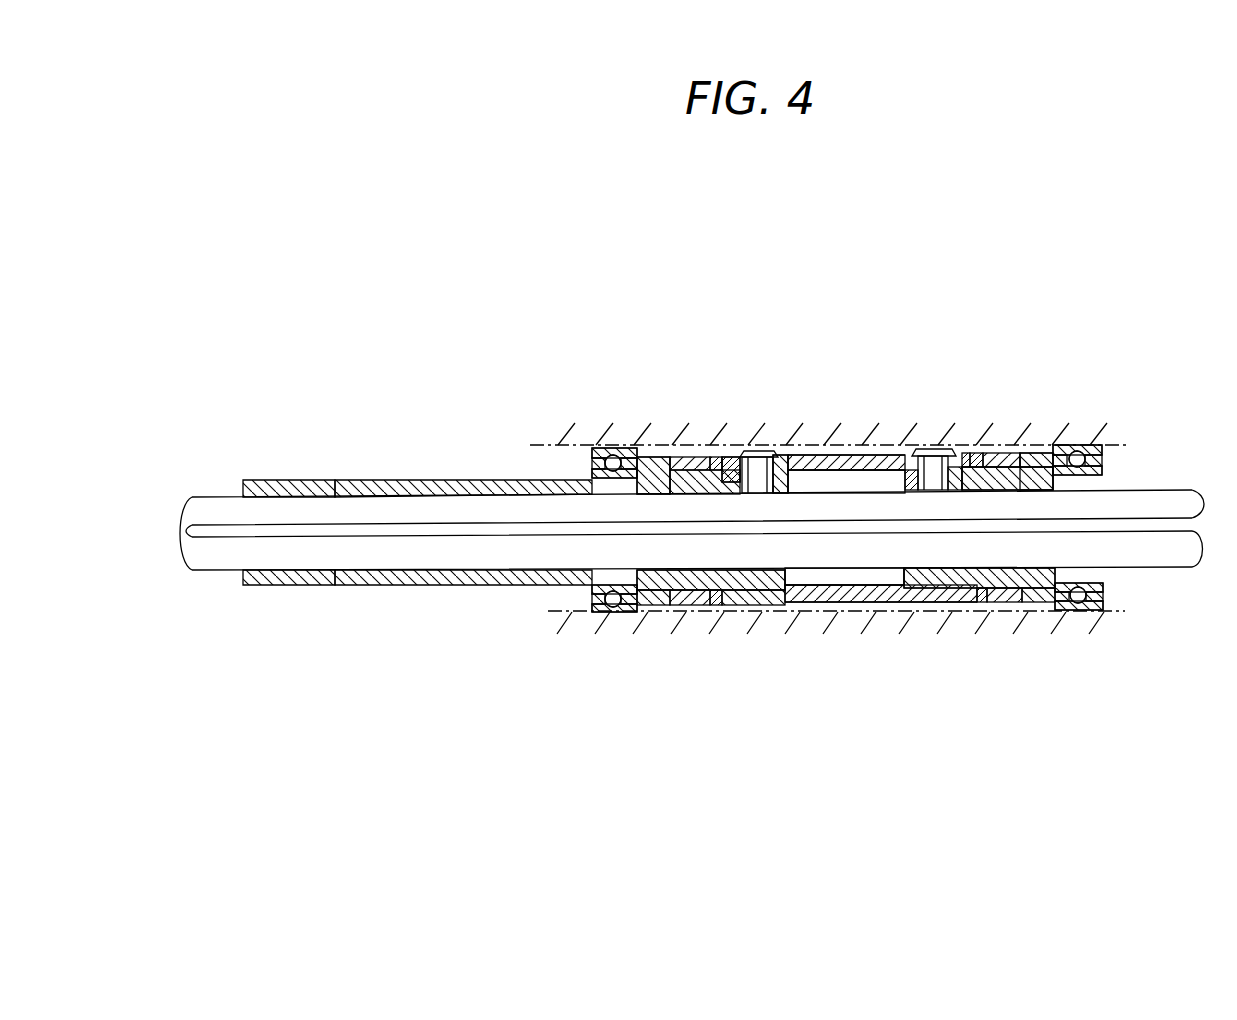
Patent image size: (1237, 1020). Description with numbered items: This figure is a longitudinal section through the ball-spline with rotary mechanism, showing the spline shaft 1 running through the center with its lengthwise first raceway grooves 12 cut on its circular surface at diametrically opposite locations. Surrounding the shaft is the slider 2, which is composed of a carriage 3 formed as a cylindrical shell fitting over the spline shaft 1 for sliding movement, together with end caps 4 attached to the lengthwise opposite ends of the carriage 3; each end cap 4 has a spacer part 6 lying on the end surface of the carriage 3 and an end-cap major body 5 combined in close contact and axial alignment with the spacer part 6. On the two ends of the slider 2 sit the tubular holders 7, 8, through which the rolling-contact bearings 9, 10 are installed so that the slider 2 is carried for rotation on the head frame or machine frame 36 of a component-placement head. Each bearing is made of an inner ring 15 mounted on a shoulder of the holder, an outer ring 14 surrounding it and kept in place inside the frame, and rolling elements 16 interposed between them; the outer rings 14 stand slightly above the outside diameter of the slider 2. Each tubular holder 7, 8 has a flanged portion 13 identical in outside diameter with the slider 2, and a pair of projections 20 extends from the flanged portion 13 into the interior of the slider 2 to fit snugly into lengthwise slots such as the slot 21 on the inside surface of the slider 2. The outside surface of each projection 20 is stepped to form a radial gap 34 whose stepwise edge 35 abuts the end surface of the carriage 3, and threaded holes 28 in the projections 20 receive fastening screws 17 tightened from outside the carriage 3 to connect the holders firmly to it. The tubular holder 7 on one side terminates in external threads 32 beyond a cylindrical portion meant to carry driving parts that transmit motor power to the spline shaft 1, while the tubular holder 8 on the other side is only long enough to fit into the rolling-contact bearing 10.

The spline shaft 1 is at (375, 510).
The first raceway grooves 12 is at (400, 537).
The external threads 32 is at (280, 480).
The tubular holder 7 is at (513, 480).
The rolling-contact bearing 9 is at (605, 447).
The rolling-contact bearing 10 is at (1084, 440).
The flanged portion 13 is at (658, 455).
The outer rings 14 is at (616, 450).
The inner rings 15 is at (585, 453).
The rolling elements 16 is at (627, 455).
The end-cap major bodies 5 is at (693, 457).
The spacer parts 6 is at (714, 457).
The radial gap 34 is at (728, 455).
The stepwise edge 35 is at (757, 383).
The fastening screws 17 is at (763, 456).
The projections 20 is at (741, 453).
The threaded holes 28 is at (735, 482).
The carriage 3 is at (811, 455).
The slider 2 is at (838, 455).
The lengthwise slot 21 is at (895, 457).
The head frame or machine frame 36 is at (852, 424).
The end caps 4 is at (997, 455).
The tubular holder 8 is at (1035, 582).